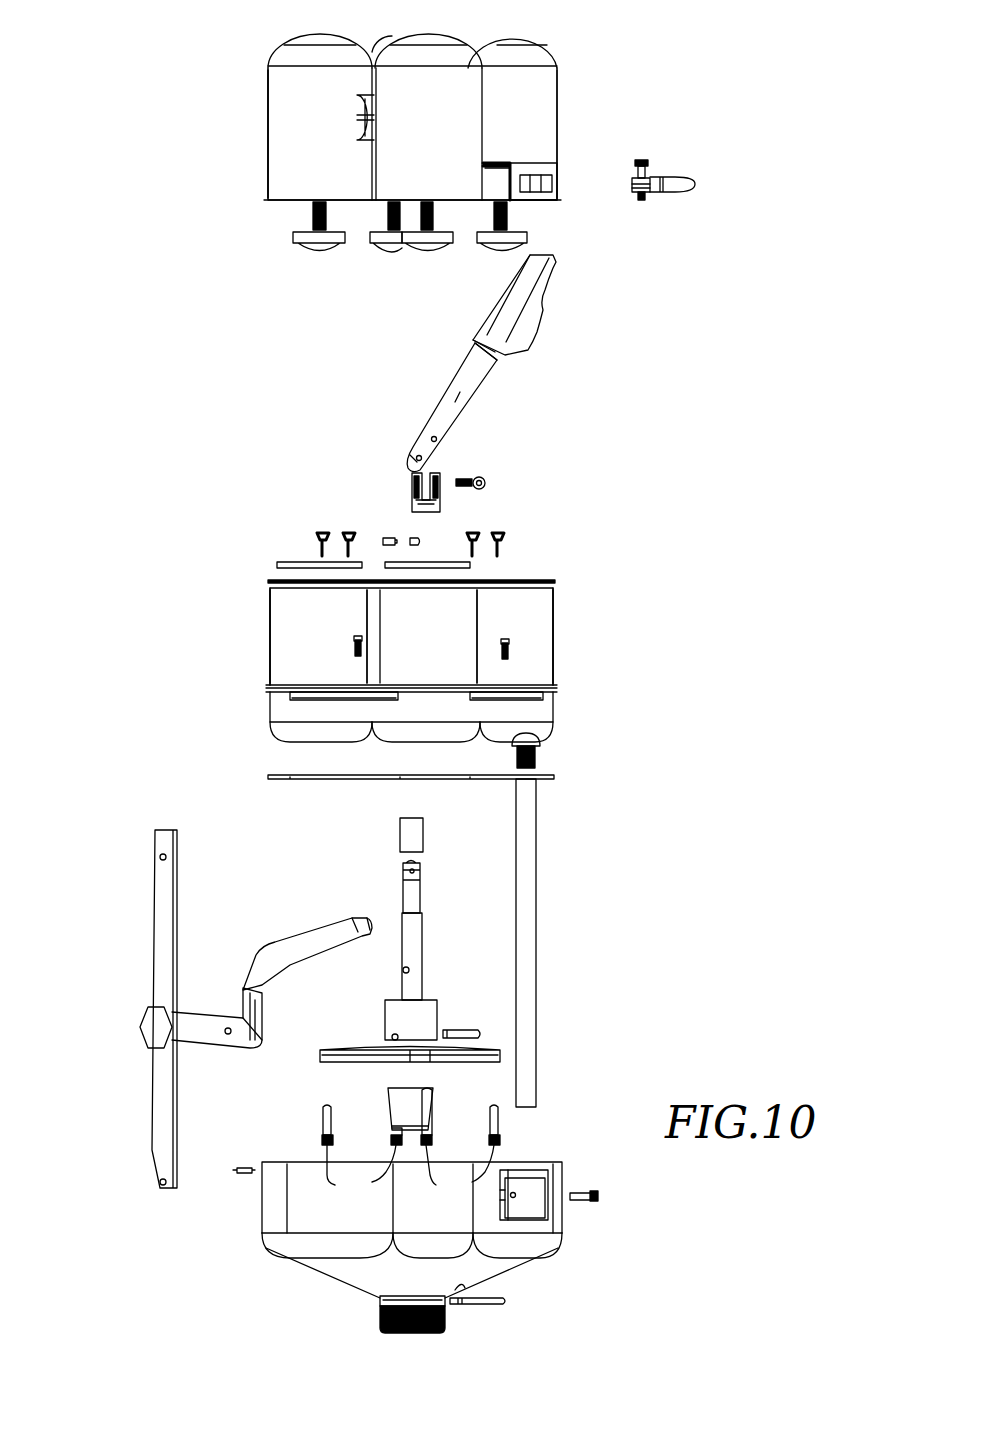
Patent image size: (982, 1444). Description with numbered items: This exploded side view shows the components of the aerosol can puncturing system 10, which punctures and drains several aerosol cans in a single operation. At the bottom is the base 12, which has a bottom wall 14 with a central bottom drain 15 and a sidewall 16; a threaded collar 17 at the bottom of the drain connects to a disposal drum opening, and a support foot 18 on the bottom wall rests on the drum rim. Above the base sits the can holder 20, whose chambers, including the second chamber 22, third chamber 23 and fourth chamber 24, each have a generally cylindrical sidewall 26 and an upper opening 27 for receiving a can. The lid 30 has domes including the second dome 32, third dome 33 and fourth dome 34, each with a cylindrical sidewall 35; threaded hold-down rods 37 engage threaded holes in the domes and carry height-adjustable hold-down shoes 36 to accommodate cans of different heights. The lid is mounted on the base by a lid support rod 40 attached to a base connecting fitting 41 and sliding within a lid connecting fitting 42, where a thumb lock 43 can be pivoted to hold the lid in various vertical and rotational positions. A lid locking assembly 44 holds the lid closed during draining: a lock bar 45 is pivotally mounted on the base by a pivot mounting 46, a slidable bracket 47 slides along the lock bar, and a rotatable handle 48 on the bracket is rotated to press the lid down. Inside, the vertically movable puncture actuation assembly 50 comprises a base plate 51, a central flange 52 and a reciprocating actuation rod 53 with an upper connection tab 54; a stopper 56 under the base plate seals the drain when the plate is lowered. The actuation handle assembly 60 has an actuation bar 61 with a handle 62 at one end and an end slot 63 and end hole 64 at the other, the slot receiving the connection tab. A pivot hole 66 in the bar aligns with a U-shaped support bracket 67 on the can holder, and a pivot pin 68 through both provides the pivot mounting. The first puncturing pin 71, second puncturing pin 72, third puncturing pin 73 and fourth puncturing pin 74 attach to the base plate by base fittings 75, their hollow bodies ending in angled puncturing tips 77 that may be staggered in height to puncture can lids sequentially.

The aerosol can puncturing system 10 is at (150, 108).
The base 12 is at (401, 1246).
The bottom wall 14 is at (302, 1273).
The central bottom drain 15 is at (384, 1302).
The sidewall 16 is at (562, 1225).
The threaded collar 17 is at (430, 1333).
The support foot 18 is at (490, 1305).
The can holder 20 is at (560, 642).
The second chamber 22 is at (318, 636).
The third chamber 23 is at (422, 636).
The fourth chamber 24 is at (515, 636).
The cylindrical sidewall 26 is at (271, 626).
The upper opening 27 is at (295, 572).
The lid 30 is at (555, 65).
The second dome 32 is at (298, 134).
The third dome 33 is at (402, 117).
The fourth dome 34 is at (524, 111).
The cylindrical sidewall 35 is at (266, 95).
The hold-down shoe 36 is at (388, 247).
The threaded hold-down rod 37 is at (328, 216).
The lid support rod 40 is at (536, 888).
The base connecting fitting 41 is at (532, 1186).
The lid connecting fitting 42 is at (538, 172).
The thumb lock 43 is at (655, 180).
The lid locking assembly 44 is at (220, 1013).
The lock bar 45 is at (160, 870).
The pivot mounting 46 is at (160, 1186).
The slidable bracket 47 is at (195, 1020).
The rotatable handle 48 is at (317, 940).
The vertically movable puncture actuation assembly 50 is at (420, 1002).
The base plate 51 is at (476, 1052).
The central flange 52 is at (432, 1022).
The reciprocating actuation rod 53 is at (413, 932).
The upper connection tab 54 is at (418, 868).
The stopper 56 is at (396, 1100).
The actuation handle assembly 60 is at (494, 363).
The actuation bar 61 is at (472, 375).
The handle 62 is at (545, 296).
The end slot 63 is at (414, 442).
The end hole 64 is at (422, 458).
The pivot hole 66 is at (438, 440).
The support bracket 67 is at (412, 497).
The pivot pin 68 is at (486, 486).
The first puncturing pin 71 is at (392, 1132).
The second puncturing pin 72 is at (323, 1128).
The third puncturing pin 73 is at (428, 1112).
The fourth puncturing pin 74 is at (498, 1128).
The base fitting 75 is at (410, 1173).
The angled puncturing tip 77 is at (324, 1105).